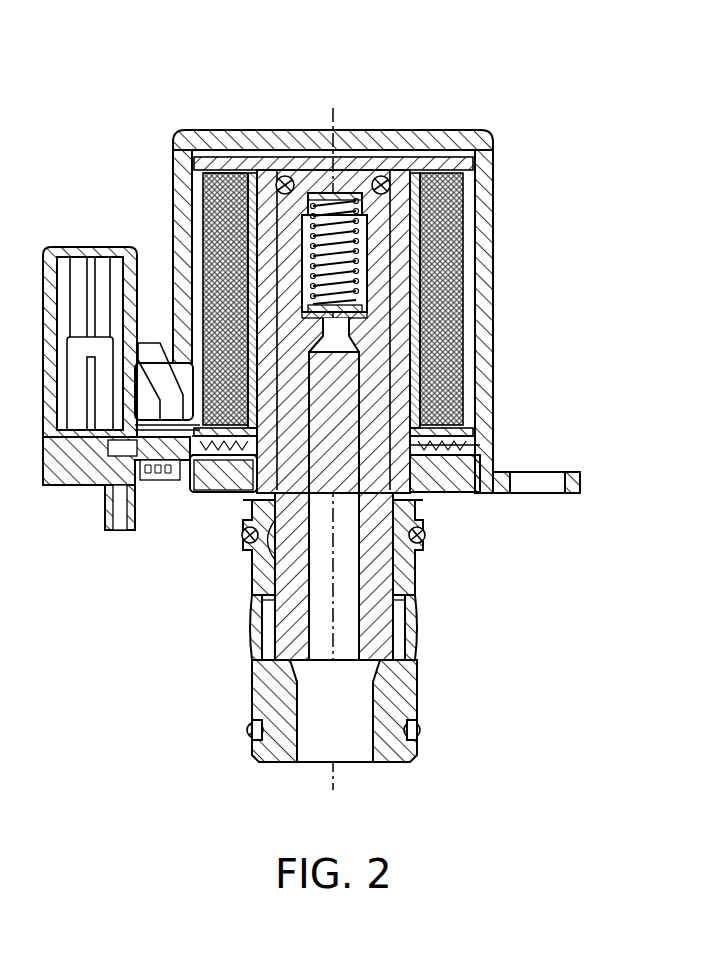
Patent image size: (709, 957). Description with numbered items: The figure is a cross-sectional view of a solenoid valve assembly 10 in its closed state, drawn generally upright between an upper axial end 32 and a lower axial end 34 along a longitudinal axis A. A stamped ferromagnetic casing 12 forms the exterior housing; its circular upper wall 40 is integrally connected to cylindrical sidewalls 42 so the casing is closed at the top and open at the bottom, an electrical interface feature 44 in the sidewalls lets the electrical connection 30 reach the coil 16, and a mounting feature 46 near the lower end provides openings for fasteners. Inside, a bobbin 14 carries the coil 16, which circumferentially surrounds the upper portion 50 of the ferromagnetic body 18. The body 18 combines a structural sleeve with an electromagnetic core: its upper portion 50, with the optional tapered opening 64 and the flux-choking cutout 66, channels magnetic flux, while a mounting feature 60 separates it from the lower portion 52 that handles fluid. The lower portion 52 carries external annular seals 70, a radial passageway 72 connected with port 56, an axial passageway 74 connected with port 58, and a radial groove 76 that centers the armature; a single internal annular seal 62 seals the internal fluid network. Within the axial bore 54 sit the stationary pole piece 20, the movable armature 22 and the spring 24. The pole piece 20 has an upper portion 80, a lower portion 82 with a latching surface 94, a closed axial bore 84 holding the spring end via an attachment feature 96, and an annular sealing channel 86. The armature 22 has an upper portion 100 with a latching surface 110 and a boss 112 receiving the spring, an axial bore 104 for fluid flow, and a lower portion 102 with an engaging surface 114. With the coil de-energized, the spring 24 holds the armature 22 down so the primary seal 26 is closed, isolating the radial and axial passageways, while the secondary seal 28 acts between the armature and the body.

The solenoid valve assembly 10 is at (595, 174).
The casing 12 is at (462, 140).
The bobbin 14 is at (484, 165).
The coil 16 is at (440, 252).
The body 18 is at (465, 283).
The pole piece 20 is at (480, 205).
The armature 22 is at (420, 346).
The spring 24 is at (285, 252).
The primary seal 26 is at (266, 662).
The secondary seal 28 is at (262, 562).
The electrical connection 30 is at (75, 449).
The upper axial end 32 is at (146, 118).
The lower axial end 34 is at (254, 790).
The upper wall 40 is at (185, 147).
The sidewalls 42 is at (485, 383).
The electrical interface feature 44 is at (80, 372).
The mounting feature 46 is at (578, 484).
The upper portion 50 is at (255, 300).
The lower portion 52 is at (410, 575).
The axial bore 54 is at (238, 477).
The port 56 is at (255, 626).
The port 58 is at (315, 742).
The mounting feature 60 is at (137, 518).
The internal annular seal 62 is at (383, 178).
The tapered opening 64 is at (283, 160).
The cutout 66 is at (180, 375).
The external annular seals 70 is at (426, 536).
The radial passageway 72 is at (400, 615).
The axial passageway 74 is at (365, 700).
The radial groove 76 is at (445, 466).
The upper portion 80 is at (305, 200).
The lower portion 82 is at (410, 267).
The closed axial bore 84 is at (295, 232).
The annular sealing channel 86 is at (280, 180).
The latching surface 94 is at (400, 296).
The attachment feature 96 is at (320, 190).
The upper portion 100 is at (412, 426).
The lower portion 102 is at (380, 642).
The axial bore 104 is at (358, 532).
The latching surface 110 is at (392, 322).
The boss 112 is at (192, 418).
The engaging surface 114 is at (250, 735).
The longitudinal axis A is at (333, 150).